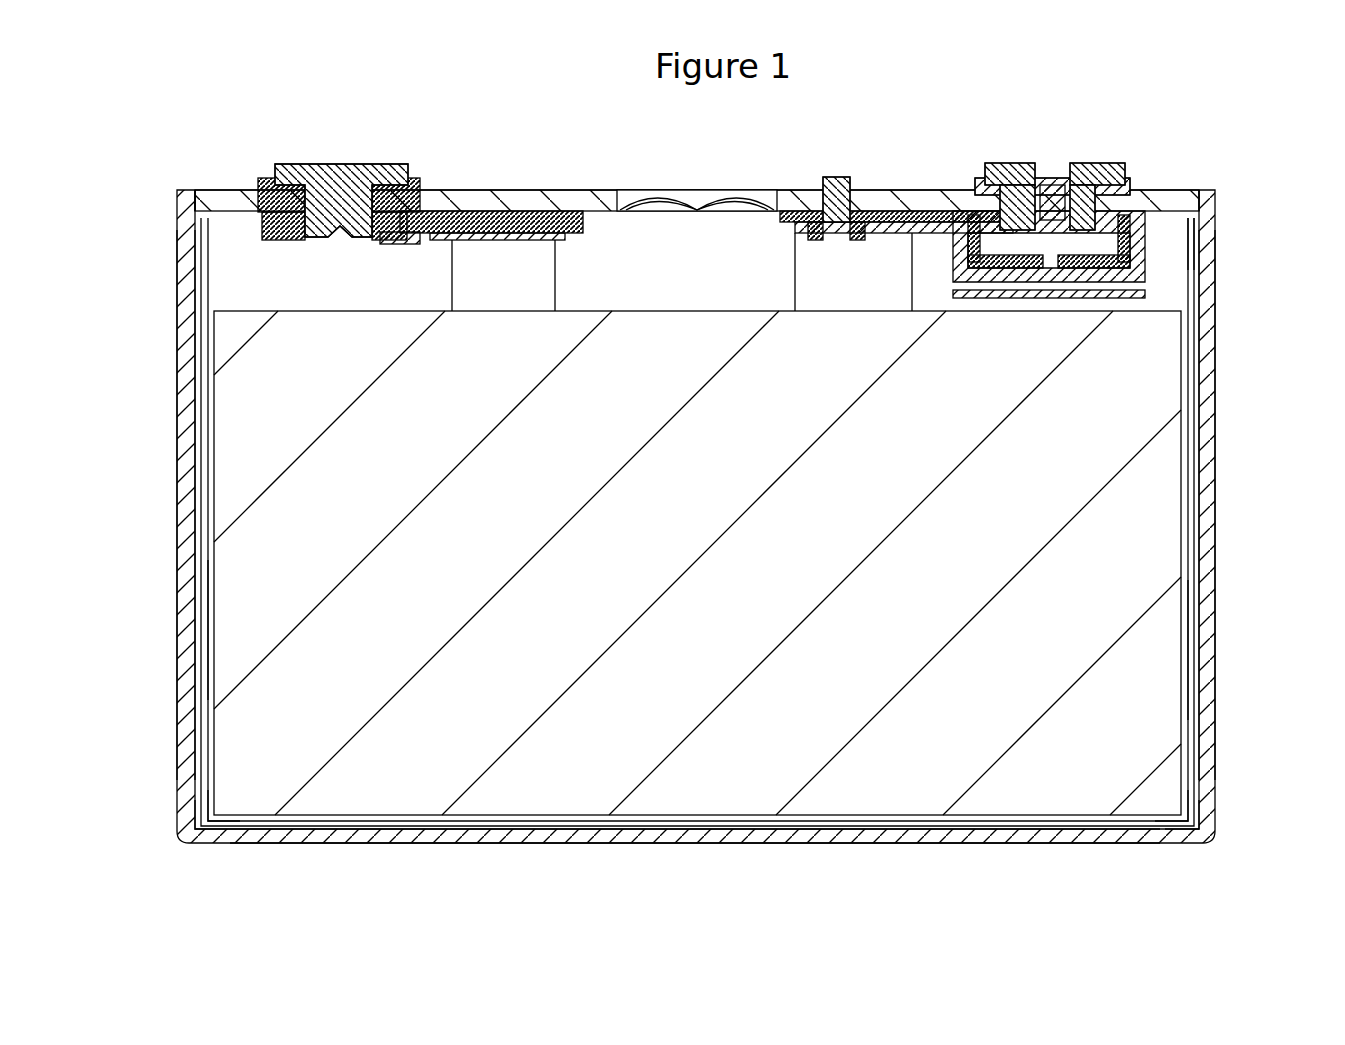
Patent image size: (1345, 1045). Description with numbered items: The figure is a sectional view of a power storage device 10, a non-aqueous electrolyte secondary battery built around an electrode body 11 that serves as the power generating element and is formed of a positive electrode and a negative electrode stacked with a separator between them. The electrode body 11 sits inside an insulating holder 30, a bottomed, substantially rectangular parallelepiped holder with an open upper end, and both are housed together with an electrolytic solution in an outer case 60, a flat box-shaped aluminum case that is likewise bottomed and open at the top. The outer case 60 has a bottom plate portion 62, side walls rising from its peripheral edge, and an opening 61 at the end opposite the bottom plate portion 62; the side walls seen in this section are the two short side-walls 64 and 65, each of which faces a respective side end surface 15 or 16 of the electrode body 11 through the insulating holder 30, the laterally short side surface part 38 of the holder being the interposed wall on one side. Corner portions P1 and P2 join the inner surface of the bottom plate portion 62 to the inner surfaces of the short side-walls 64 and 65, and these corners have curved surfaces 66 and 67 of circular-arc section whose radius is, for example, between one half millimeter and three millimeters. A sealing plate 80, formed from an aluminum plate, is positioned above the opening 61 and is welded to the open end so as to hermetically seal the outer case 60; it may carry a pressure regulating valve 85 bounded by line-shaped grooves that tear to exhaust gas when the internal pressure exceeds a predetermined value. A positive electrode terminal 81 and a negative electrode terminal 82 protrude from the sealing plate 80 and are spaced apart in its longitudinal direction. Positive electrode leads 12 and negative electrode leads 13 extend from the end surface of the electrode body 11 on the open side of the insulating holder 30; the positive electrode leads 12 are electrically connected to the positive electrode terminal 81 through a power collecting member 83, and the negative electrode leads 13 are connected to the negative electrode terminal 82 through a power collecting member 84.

The power storage device 10 is at (1146, 133).
The electrode body 11 is at (1130, 440).
The positive electrode leads 12 is at (870, 290).
The negative electrode leads 13 is at (485, 265).
The side end surface 15 is at (1186, 650).
The side end surface 16 is at (212, 630).
The insulating holder 30 is at (1180, 250).
The side surface part 38 is at (1200, 370).
The outer case 60 is at (1218, 295).
The opening 61 is at (200, 193).
The bottom plate portion 62 is at (860, 845).
The short side-wall 64 is at (1216, 487).
The short side-wall 65 is at (186, 487).
The curved surface 66 is at (1180, 820).
The curved surface 67 is at (216, 780).
The sealing plate 80 is at (546, 186).
The positive electrode terminal 81 is at (1085, 165).
The negative electrode terminal 82 is at (340, 170).
The power collecting member 83 is at (918, 240).
The power collecting member 84 is at (283, 240).
The pressure regulating valve 85 is at (660, 190).
The corner portion P1 is at (1166, 820).
The corner portion P2 is at (220, 800).